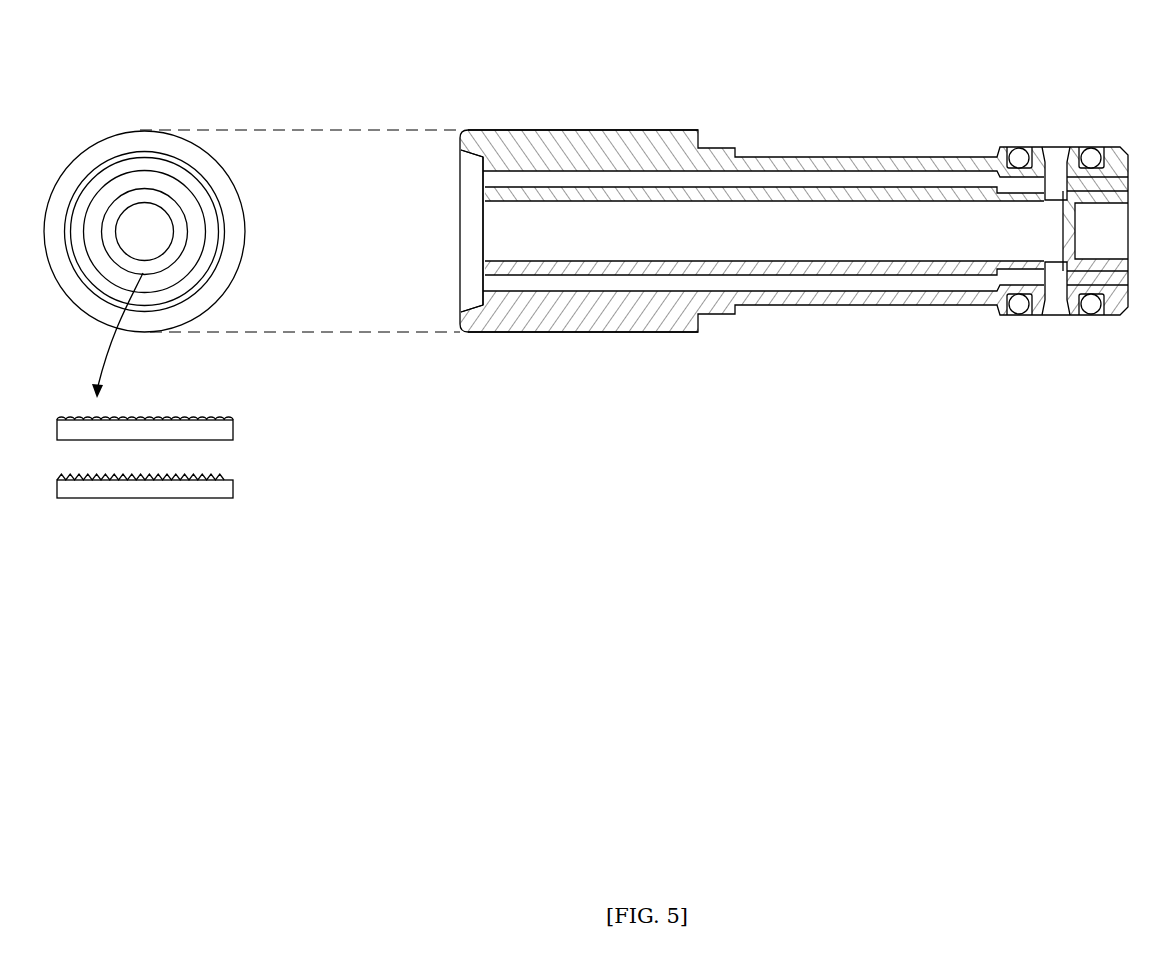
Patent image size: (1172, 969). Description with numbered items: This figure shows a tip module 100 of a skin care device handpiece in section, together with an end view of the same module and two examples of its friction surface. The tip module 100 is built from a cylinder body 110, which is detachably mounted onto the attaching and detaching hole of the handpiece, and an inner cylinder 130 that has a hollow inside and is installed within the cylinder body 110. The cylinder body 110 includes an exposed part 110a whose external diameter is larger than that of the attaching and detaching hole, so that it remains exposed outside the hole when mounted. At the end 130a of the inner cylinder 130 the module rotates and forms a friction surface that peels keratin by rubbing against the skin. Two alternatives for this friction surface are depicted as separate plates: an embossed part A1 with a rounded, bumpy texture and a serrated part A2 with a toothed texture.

The tip module 100 is at (763, 362).
The cylinder body 110 is at (800, 157).
The exposed part 110a is at (567, 130).
The inner cylinder 130 is at (590, 270).
The end of the inner cylinder 130a is at (146, 193).
The embossed part A1 is at (213, 418).
The serrated part A2 is at (225, 478).